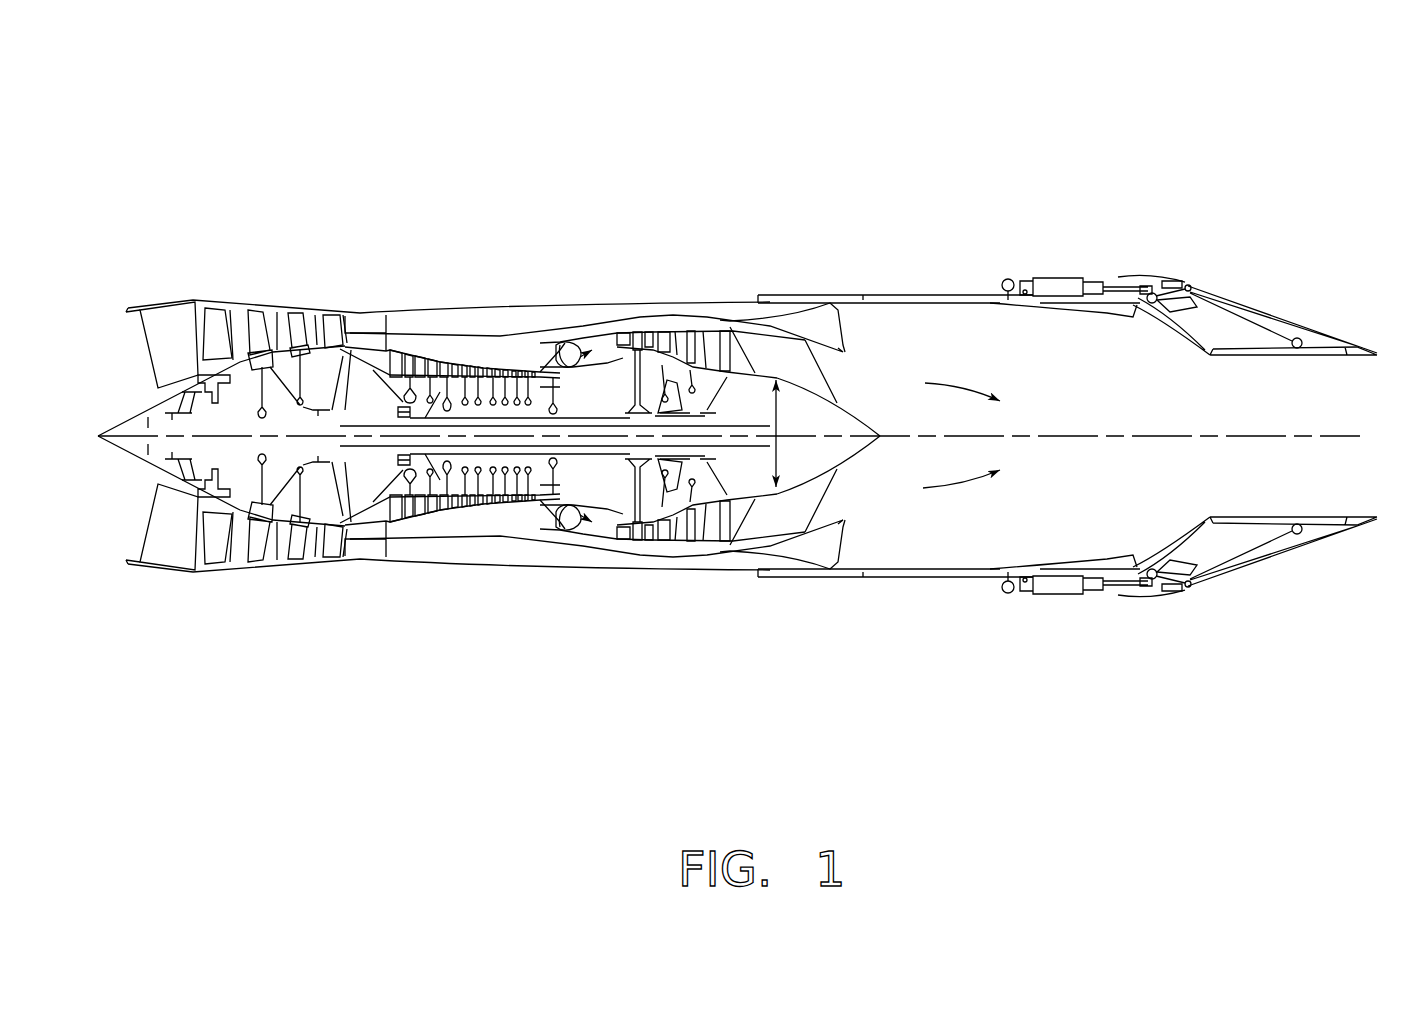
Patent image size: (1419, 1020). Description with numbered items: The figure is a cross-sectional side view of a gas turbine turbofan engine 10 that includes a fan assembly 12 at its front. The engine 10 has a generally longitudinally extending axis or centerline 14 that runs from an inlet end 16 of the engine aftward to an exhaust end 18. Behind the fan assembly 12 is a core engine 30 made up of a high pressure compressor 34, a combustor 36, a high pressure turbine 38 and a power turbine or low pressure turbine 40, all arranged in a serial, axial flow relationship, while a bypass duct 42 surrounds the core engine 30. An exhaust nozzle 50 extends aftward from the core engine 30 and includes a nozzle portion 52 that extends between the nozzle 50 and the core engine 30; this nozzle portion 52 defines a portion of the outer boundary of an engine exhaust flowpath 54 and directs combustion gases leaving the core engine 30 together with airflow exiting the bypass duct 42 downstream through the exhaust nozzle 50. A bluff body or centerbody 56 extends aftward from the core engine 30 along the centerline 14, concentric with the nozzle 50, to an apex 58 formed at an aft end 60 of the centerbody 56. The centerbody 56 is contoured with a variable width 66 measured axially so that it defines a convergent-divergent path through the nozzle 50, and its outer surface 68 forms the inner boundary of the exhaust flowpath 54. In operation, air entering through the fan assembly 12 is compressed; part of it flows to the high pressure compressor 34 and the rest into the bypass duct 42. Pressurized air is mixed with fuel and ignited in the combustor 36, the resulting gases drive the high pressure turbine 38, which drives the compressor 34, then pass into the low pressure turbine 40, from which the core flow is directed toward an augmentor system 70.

The gas turbine turbofan engine 10 is at (257, 106).
The fan assembly 12 is at (240, 305).
The centerline 14 is at (145, 397).
The inlet end 16 is at (130, 316).
The exhaust end 18 is at (1380, 372).
The core engine 30 is at (495, 597).
The high pressure compressor 34 is at (438, 355).
The combustor 36 is at (588, 348).
The high pressure turbine 38 is at (637, 350).
The low pressure turbine 40 is at (678, 330).
The bypass duct 42 is at (478, 313).
The exhaust nozzle 50 is at (1007, 272).
The nozzle portion 52 is at (812, 297).
The engine exhaust flowpath 54 is at (950, 483).
The centerbody 56 is at (878, 440).
The apex 58 is at (873, 443).
The aft end 60 is at (815, 390).
The variable width 66 is at (776, 432).
The outer surface 68 is at (810, 482).
The augmentor system 70 is at (893, 360).